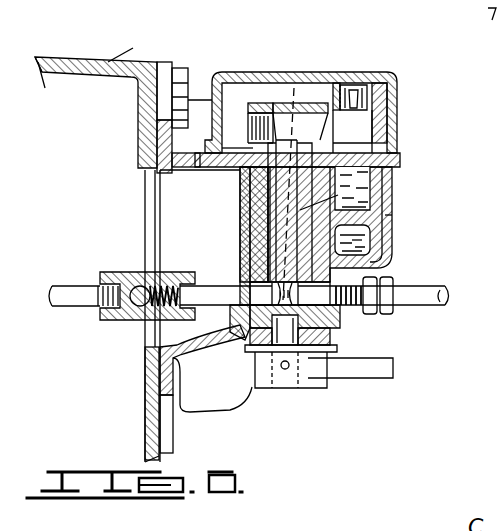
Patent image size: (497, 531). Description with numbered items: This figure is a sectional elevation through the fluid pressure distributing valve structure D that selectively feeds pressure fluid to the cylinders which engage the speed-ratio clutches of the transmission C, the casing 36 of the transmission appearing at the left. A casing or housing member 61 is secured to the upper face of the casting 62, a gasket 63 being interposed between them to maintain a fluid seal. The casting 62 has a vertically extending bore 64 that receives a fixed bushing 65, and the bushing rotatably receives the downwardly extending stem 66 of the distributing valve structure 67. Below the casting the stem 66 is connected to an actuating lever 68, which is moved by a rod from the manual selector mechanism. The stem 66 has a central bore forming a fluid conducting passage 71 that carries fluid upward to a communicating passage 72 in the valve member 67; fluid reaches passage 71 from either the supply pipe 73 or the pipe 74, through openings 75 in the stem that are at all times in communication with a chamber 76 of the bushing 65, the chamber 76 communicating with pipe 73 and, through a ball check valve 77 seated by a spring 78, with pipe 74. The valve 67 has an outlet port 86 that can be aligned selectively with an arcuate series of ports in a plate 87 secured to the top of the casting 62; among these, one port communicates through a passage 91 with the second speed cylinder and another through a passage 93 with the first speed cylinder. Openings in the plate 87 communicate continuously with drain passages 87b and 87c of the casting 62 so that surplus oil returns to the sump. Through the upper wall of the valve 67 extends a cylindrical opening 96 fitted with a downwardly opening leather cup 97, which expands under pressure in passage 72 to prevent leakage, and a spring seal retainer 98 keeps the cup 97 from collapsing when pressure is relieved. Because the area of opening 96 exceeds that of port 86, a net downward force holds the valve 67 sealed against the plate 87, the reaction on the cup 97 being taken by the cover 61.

The casing 36 is at (78, 57).
The transmission C is at (130, 40).
The distributor valve casing structure D is at (432, 81).
The casing or housing member 61 is at (265, 70).
The casting 62 is at (382, 183).
The gasket 63 is at (398, 160).
The vertically extending bore 64 is at (248, 212).
The fixed bushing 65 is at (258, 235).
The stem 66 is at (255, 258).
The distributing valve structure 67 is at (305, 108).
The actuating lever 68 is at (380, 380).
The fluid conducting passage 71 is at (330, 192).
The communicating passage 72 is at (262, 118).
The supply pipe 73 is at (425, 292).
The pipe 74 is at (65, 288).
The openings 75 is at (248, 342).
The chamber 76 is at (342, 325).
The ball check valve 77 is at (125, 278).
The spring 78 is at (138, 272).
The outlet port 86 is at (362, 138).
The plate 87 is at (240, 135).
The passage 87b is at (222, 168).
The passage 87c is at (165, 345).
The passage 91 is at (360, 243).
The passage 93 is at (380, 214).
The cylindrical opening 96 is at (388, 90).
The leather cup 97 is at (345, 86).
The spring seal retainer 98 is at (355, 92).